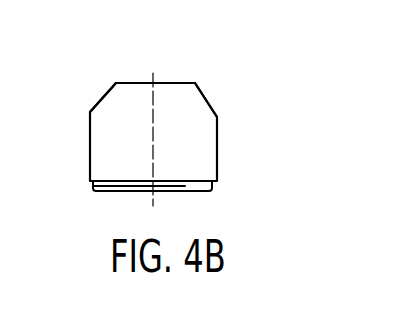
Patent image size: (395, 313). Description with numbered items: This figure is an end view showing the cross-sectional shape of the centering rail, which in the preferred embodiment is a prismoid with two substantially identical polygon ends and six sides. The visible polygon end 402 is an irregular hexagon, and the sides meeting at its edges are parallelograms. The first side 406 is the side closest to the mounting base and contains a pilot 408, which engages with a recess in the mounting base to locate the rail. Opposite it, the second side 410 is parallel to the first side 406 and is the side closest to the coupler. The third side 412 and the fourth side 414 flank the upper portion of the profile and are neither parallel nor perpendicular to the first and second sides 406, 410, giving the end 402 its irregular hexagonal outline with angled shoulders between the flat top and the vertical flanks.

The polygon end 402 is at (210, 150).
The first side 406 is at (187, 198).
The pilot 408 is at (128, 191).
The second side 410 is at (177, 72).
The third side 412 is at (94, 94).
The fourth side 414 is at (212, 95).